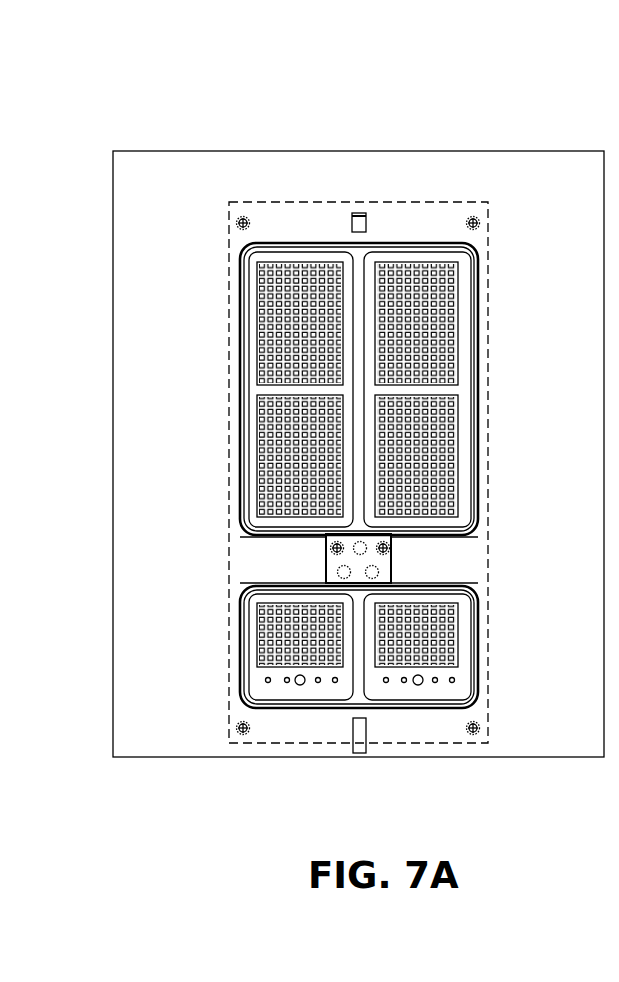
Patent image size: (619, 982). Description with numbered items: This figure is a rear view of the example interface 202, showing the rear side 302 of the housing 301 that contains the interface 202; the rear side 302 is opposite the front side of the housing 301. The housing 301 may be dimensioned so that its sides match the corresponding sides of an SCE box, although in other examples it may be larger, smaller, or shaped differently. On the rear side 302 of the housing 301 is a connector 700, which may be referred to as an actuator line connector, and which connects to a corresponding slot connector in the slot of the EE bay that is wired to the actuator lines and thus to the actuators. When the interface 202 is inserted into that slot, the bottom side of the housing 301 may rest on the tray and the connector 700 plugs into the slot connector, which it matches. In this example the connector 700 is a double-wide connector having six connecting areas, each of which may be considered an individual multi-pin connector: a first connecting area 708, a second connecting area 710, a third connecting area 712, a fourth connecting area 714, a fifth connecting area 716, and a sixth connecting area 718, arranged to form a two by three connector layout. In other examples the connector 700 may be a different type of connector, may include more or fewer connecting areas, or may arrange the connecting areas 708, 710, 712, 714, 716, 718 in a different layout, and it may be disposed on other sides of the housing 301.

The interface 202 is at (198, 58).
The rear side 302 is at (179, 187).
The housing 301 is at (359, 182).
The connector 700 is at (351, 463).
The first connecting area 708 is at (258, 323).
The second connecting area 710 is at (258, 450).
The third connecting area 712 is at (258, 633).
The fourth connecting area 714 is at (455, 321).
The fifth connecting area 716 is at (455, 450).
The sixth connecting area 718 is at (455, 650).